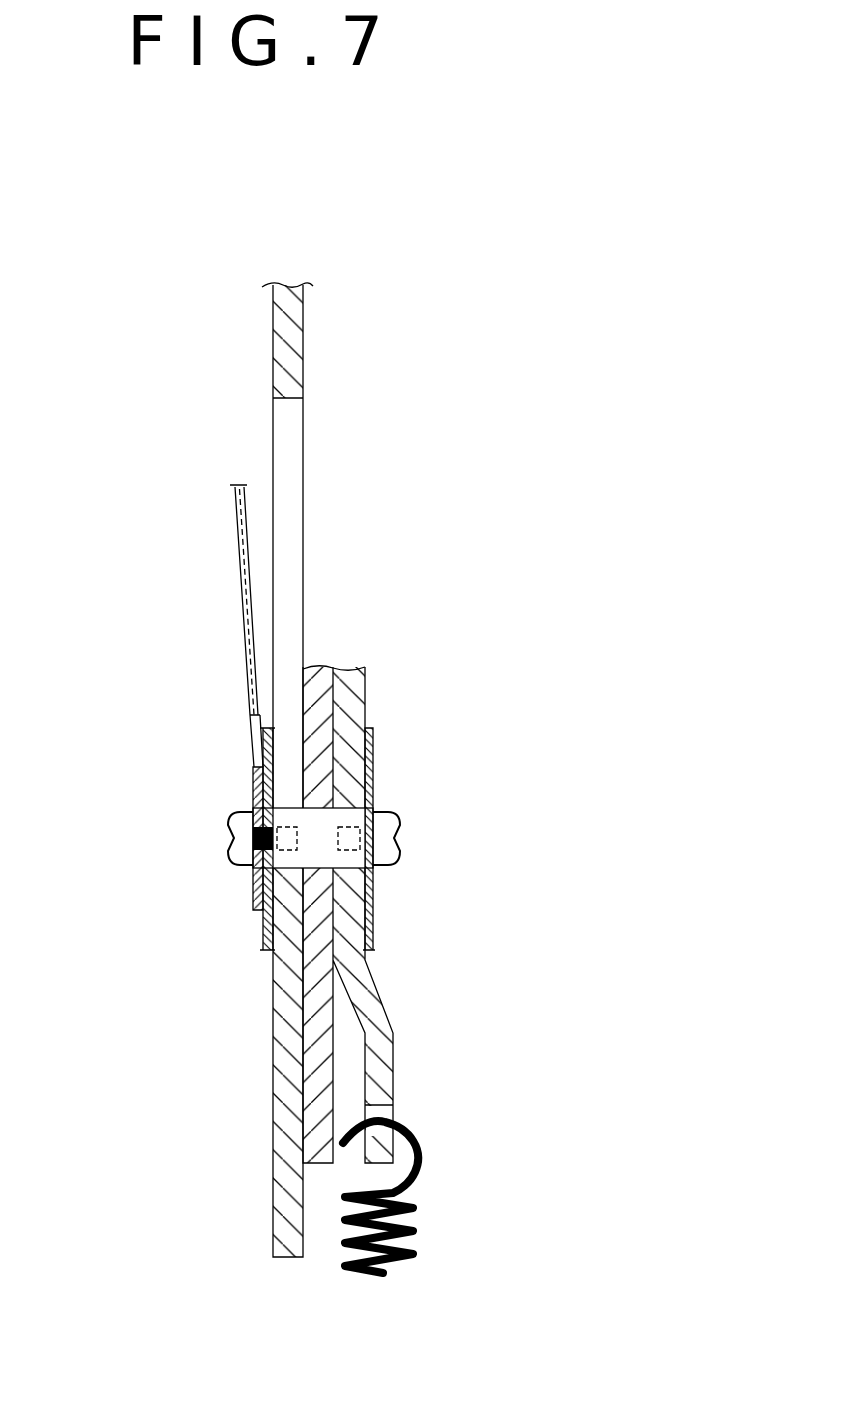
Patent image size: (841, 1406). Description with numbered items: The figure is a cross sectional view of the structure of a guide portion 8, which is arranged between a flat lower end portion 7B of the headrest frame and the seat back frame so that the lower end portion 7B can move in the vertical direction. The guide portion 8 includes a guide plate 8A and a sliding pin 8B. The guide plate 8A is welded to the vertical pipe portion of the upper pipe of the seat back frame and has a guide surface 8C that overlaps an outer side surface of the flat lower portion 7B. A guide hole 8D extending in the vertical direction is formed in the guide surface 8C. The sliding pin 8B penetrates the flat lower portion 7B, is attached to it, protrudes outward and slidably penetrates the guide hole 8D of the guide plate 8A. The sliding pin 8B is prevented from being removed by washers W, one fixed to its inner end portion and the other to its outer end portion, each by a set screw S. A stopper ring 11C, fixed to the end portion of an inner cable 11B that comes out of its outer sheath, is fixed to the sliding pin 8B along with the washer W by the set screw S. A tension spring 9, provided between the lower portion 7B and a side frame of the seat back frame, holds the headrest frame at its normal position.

The flat lower end portion 7B is at (367, 717).
The guide portion 8 is at (233, 819).
The guide plate 8A is at (270, 1040).
The sliding pin 8B is at (323, 822).
The guide surface 8C is at (305, 1203).
The guide hole 8D is at (288, 533).
The tension spring 9 is at (413, 1252).
The inner cable 11B is at (243, 607).
The stopper ring 11C is at (255, 790).
The set screw S is at (243, 853).
The washer W is at (263, 930).